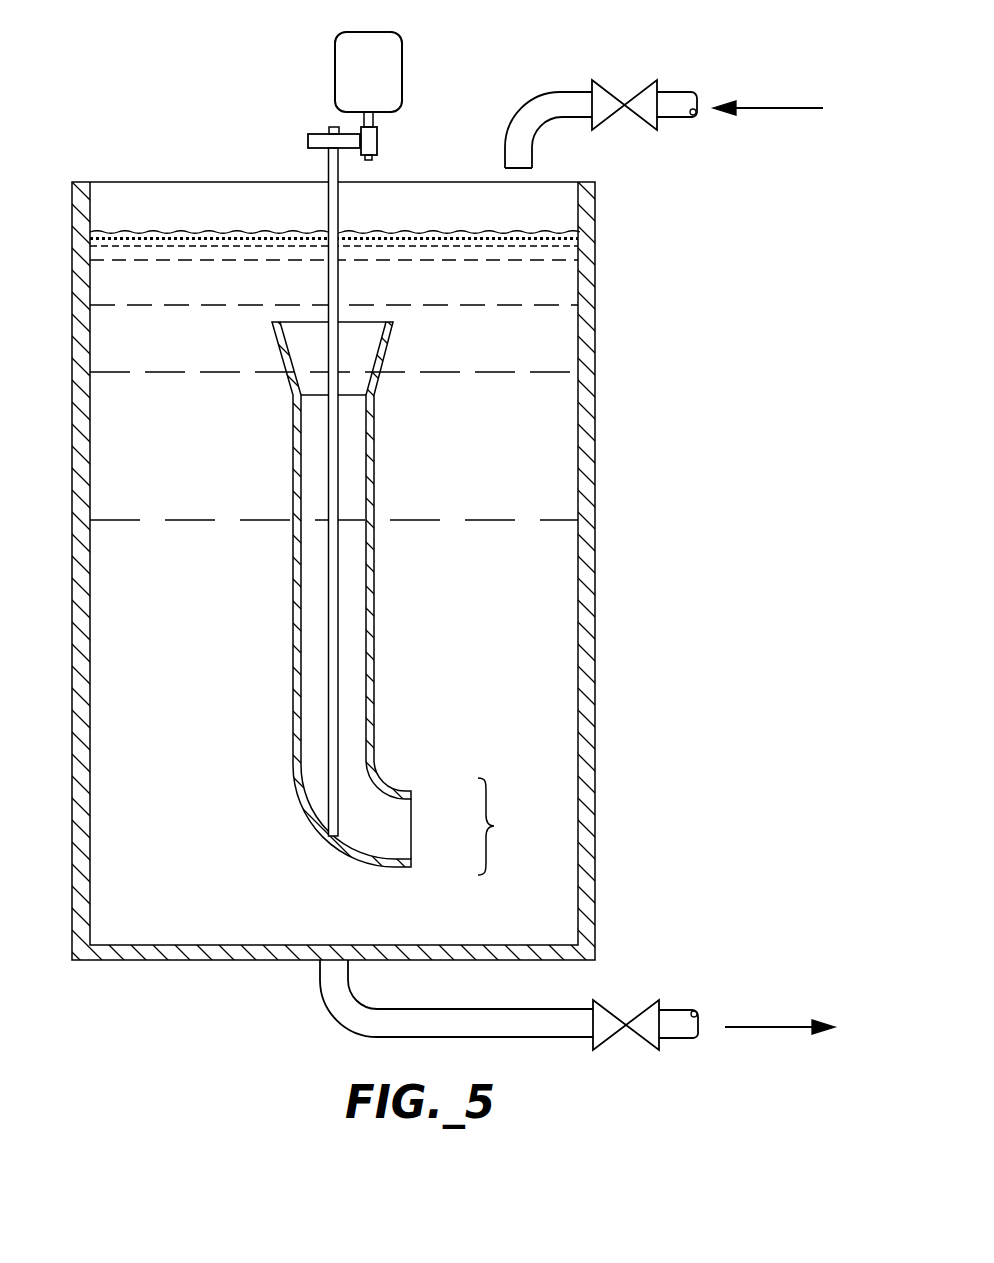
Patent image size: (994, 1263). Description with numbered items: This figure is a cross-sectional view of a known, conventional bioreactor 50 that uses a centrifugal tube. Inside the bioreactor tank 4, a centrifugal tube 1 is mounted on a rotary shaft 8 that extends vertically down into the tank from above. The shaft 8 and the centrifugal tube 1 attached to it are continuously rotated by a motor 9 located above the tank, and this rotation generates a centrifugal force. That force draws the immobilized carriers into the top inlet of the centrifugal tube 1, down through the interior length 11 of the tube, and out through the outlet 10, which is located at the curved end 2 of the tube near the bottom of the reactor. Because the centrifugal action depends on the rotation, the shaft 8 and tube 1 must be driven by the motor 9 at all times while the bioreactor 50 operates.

The centrifugal tube 1 is at (392, 598).
The curved end 2 is at (495, 826).
The bioreactor tank 4 is at (594, 580).
The rotary shaft 8 is at (333, 297).
The motor 9 is at (393, 82).
The outlet 10 is at (395, 838).
The interior length 11 is at (355, 742).
The conventional bioreactor 50 is at (494, 476).